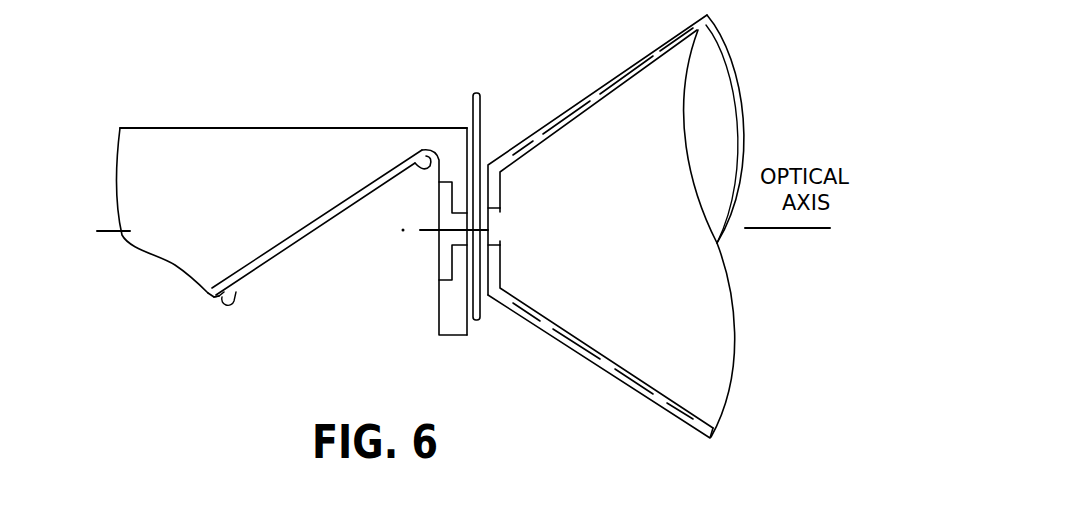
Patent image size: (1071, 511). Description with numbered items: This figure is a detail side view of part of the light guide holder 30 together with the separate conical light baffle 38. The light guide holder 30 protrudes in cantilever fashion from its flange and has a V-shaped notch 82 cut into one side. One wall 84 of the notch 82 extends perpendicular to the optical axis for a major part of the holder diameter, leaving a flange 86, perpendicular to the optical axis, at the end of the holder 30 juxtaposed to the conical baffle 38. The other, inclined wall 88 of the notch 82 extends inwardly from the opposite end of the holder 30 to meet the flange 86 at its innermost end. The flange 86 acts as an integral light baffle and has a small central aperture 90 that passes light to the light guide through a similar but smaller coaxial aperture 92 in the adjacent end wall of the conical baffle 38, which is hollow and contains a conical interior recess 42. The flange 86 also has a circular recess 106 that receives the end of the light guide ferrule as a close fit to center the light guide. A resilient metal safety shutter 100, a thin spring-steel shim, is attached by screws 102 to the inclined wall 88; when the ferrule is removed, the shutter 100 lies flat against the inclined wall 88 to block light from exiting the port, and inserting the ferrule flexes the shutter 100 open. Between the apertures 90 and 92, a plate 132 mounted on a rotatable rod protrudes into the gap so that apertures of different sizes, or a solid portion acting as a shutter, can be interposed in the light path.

The light guide holder 30 is at (259, 150).
The conical light baffle 38 is at (575, 357).
The conical interior recess 42 is at (648, 365).
The V-shaped notch 82 is at (359, 259).
The wall of the notch 84 is at (439, 322).
The flange 86 is at (463, 325).
The inclined wall 88 is at (243, 283).
The central aperture 90 is at (438, 223).
The coaxial aperture 92 is at (494, 245).
The safety shutter 100 is at (300, 240).
The screws 102 is at (231, 300).
The circular recess 106 is at (440, 277).
The plate 132 is at (473, 103).